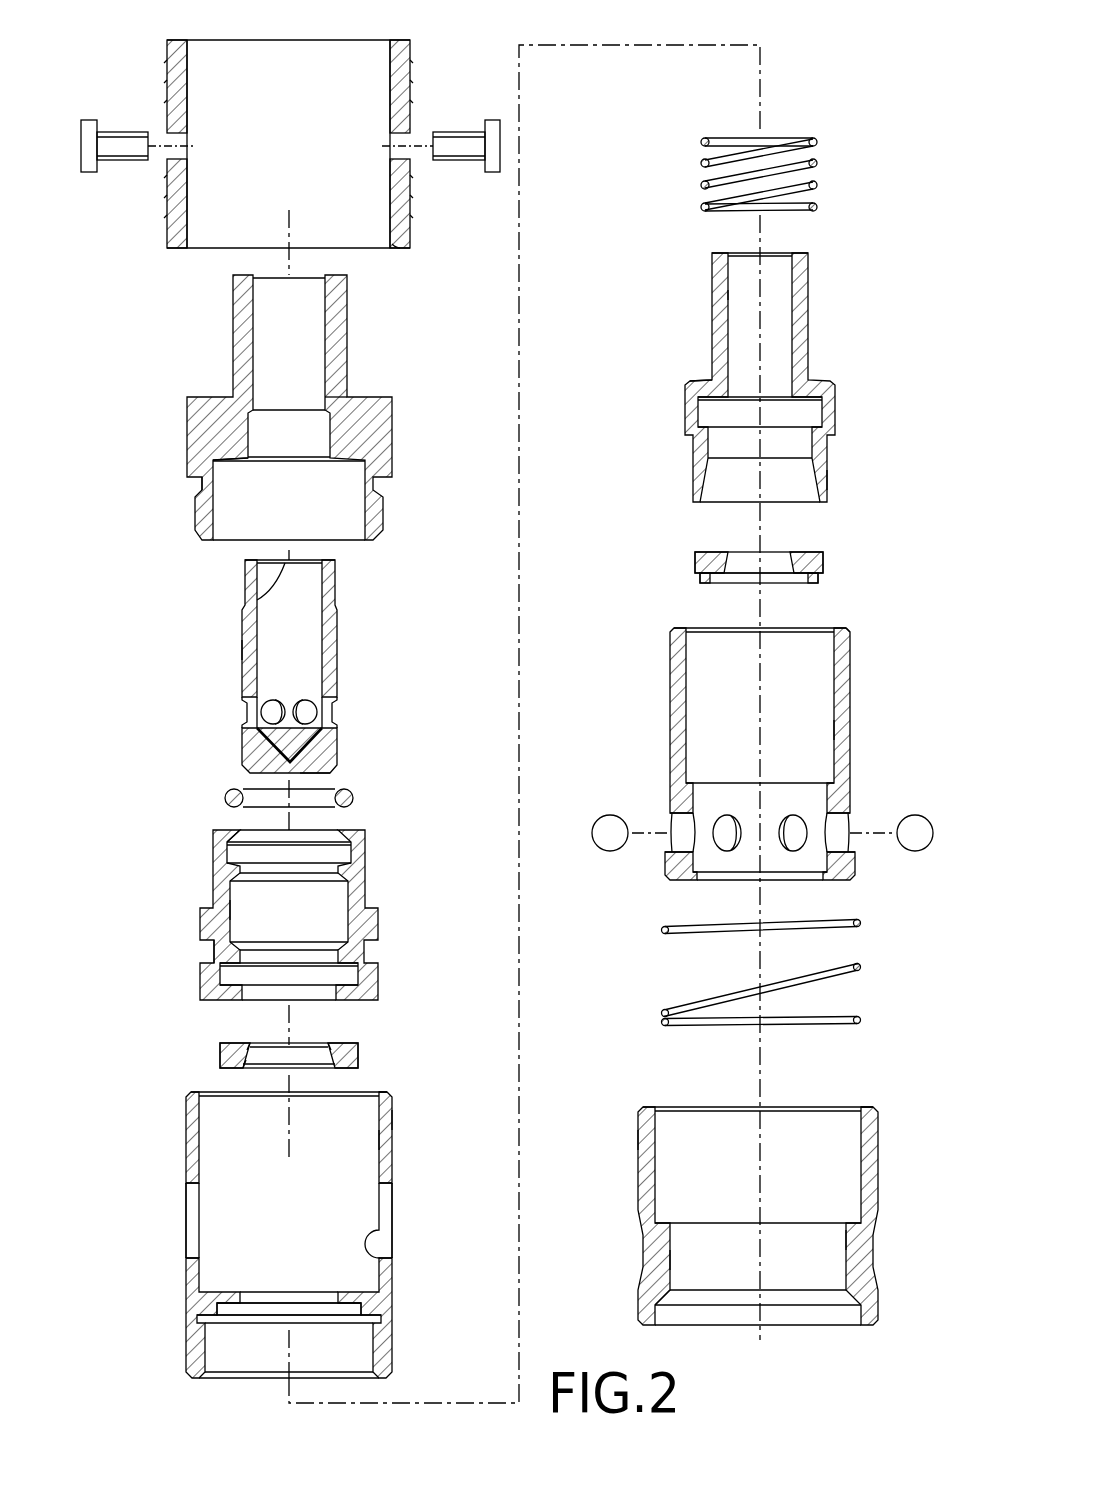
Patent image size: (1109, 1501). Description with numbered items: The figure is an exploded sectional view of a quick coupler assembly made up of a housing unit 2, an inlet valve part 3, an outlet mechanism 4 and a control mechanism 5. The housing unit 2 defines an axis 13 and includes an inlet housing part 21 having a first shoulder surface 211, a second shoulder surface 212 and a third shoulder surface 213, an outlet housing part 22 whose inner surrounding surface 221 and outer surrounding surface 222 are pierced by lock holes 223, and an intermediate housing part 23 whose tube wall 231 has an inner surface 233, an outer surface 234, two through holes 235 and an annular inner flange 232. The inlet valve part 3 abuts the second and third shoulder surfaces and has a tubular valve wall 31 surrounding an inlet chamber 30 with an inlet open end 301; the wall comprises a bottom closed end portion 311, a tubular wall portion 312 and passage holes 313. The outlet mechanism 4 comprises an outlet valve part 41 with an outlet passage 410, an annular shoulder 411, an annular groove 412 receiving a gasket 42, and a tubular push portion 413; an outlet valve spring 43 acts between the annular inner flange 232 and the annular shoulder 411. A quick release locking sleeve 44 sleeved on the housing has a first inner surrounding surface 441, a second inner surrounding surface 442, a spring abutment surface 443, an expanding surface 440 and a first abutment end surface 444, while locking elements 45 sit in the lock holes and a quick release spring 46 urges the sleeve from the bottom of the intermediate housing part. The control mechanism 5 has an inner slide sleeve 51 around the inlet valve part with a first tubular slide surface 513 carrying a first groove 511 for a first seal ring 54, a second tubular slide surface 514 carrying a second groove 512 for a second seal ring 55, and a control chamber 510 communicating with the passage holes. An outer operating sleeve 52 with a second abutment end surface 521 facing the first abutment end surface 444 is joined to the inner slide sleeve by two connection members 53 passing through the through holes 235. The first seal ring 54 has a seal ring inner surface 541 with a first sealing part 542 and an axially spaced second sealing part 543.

The housing unit 2 is at (273, 1211).
The inlet valve part 3 is at (287, 666).
The outlet mechanism 4 is at (761, 727).
The control mechanism 5 is at (290, 592).
The axis 13 is at (519, 553).
The inlet housing part 21 is at (200, 432).
The outlet housing part 22 is at (789, 764).
The intermediate housing part 23 is at (273, 1211).
The inlet chamber 30 is at (290, 625).
The tubular valve wall 31 is at (286, 666).
The outlet valve part 41 is at (772, 364).
The gasket 42 is at (823, 562).
The outlet valve spring 43 is at (816, 162).
The quick release locking sleeve 44 is at (763, 1195).
The locking elements 45 is at (607, 832).
The quick release spring 46 is at (860, 967).
The inner slide sleeve 51 is at (287, 901).
The outer operating sleeve 52 is at (408, 216).
The connection members 53 is at (128, 135).
The first seal ring 54 is at (267, 1068).
The second seal ring 55 is at (228, 793).
The first shoulder surface 211 is at (200, 475).
The second shoulder surface 212 is at (233, 457).
The third shoulder surface 213 is at (330, 403).
The inner surrounding surface 221 is at (830, 720).
The outer surrounding surface 222 is at (850, 655).
The lock holes 223 is at (673, 843).
The tube wall 231 is at (385, 1138).
The annular inner flange 232 is at (345, 1298).
The inner surface 233 is at (370, 1100).
The outer surface 234 is at (393, 1118).
The through holes 235 is at (192, 1205).
The inlet open end 301 is at (287, 563).
The bottom closed end portion 311 is at (320, 762).
The tubular wall portion 312 is at (250, 645).
The passage holes 313 is at (245, 713).
The outlet passage 410 is at (762, 297).
The annular shoulder 411 is at (700, 383).
The annular groove 412 is at (810, 412).
The tubular push portion 413 is at (830, 478).
The expanding surface 440 is at (655, 1300).
The first inner surrounding surface 441 is at (650, 1137).
The second inner surrounding surface 442 is at (665, 1258).
The spring abutment surface 443 is at (855, 1235).
The first abutment end surface 444 is at (868, 1108).
The control chamber 510 is at (247, 912).
The first groove 511 is at (345, 975).
The second groove 512 is at (355, 855).
The first tubular slide surface 513 is at (258, 983).
The second tubular slide surface 514 is at (262, 832).
The second abutment end surface 521 is at (398, 250).
The seal ring inner surface 541 is at (262, 1041).
The first sealing part 542 is at (315, 1045).
The second sealing part 543 is at (262, 1062).